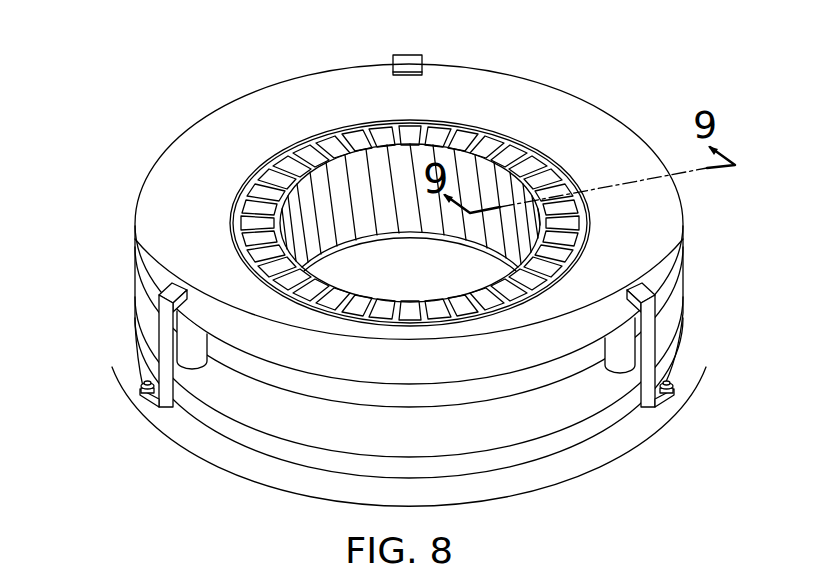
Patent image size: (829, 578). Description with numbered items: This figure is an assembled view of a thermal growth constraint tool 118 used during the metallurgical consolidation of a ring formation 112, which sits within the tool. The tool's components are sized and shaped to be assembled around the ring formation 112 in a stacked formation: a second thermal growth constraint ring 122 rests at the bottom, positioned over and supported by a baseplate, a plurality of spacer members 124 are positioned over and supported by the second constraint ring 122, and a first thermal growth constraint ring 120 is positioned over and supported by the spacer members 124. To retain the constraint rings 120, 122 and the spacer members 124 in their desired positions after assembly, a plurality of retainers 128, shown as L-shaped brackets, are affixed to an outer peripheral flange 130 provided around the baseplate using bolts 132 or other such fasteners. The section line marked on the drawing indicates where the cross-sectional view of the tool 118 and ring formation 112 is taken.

The ring formation 112 is at (335, 141).
The thermal growth constraint tool 118 is at (195, 111).
The first thermal growth constraint ring 120 is at (618, 132).
The second thermal growth constraint ring 122 is at (610, 442).
The spacer members 124 is at (197, 353).
The retainers 128 is at (405, 54).
The outer peripheral flange 130 is at (703, 292).
The bolts 132 is at (140, 394).